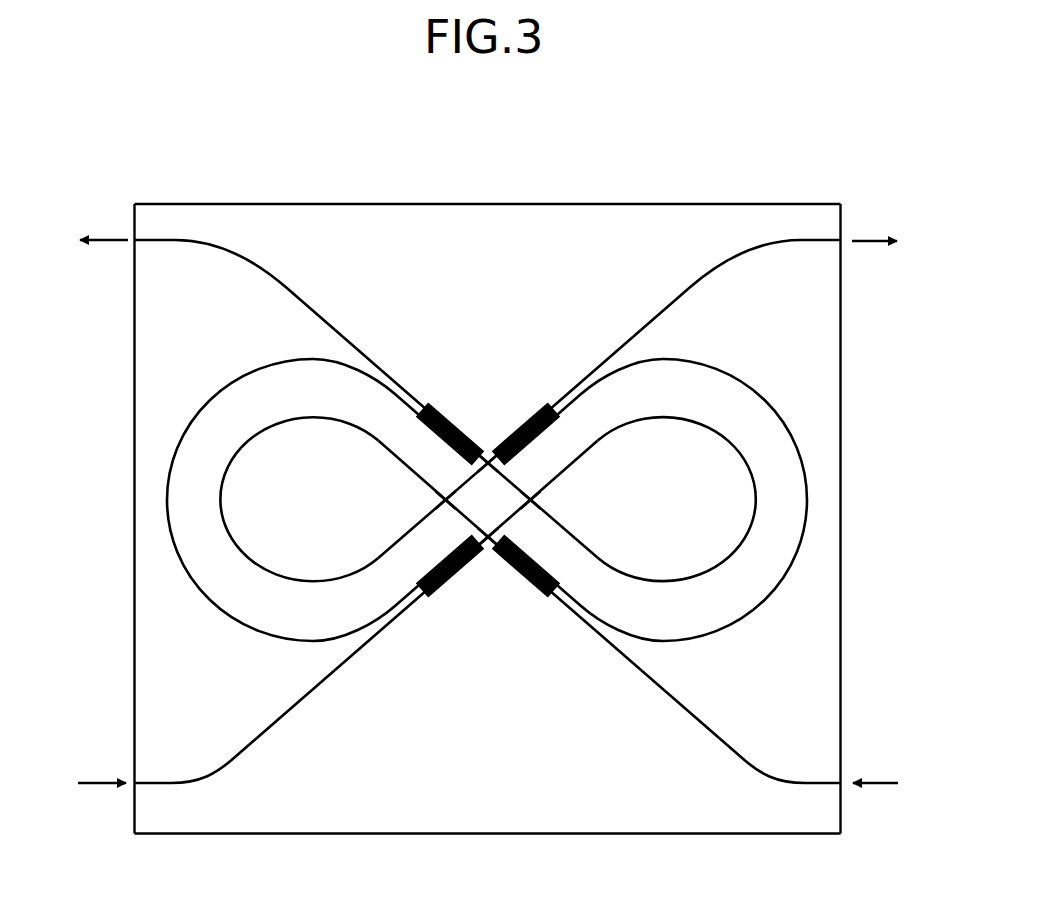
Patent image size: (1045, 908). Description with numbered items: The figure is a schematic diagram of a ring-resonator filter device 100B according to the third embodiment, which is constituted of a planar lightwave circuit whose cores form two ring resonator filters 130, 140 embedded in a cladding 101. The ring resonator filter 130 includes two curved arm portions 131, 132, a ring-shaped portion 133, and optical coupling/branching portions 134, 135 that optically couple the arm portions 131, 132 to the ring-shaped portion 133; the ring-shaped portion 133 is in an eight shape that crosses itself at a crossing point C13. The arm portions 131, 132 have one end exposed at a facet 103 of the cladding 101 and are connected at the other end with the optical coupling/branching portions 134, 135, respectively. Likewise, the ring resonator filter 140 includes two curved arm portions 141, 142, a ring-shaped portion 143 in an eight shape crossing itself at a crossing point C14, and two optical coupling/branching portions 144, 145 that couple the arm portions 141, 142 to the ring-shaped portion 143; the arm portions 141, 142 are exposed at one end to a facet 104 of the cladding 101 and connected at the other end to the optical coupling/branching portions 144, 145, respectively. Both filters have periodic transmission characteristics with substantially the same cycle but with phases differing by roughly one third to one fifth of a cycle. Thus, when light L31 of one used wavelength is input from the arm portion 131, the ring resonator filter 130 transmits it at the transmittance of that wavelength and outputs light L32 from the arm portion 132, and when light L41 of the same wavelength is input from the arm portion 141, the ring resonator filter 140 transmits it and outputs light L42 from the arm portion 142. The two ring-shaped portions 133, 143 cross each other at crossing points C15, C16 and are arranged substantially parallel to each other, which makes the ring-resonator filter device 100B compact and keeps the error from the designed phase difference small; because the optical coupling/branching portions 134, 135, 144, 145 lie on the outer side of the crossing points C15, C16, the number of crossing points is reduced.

The ring-resonator filter device 100B is at (903, 144).
The cladding 101 is at (787, 813).
The facet 103 is at (134, 666).
The facet 104 is at (841, 663).
The ring resonator filter 130 is at (170, 447).
The arm portion 131 is at (371, 640).
The arm portion 132 is at (358, 348).
The ring-shaped portion 133 is at (172, 561).
The optical coupling/branching portion 134 is at (449, 582).
The optical coupling/branching portion 135 is at (450, 410).
The ring resonator filter 140 is at (806, 418).
The arm portion 141 is at (604, 640).
The arm portion 142 is at (604, 358).
The ring-shaped portion 143 is at (783, 576).
The optical coupling/branching portion 144 is at (527, 582).
The optical coupling/branching portion 145 is at (526, 410).
The crossing point C13 is at (541, 498).
The crossing point C14 is at (433, 496).
The crossing point C15 is at (474, 530).
The crossing point C16 is at (503, 468).
The light L31 is at (84, 781).
The light L32 is at (102, 239).
The light L41 is at (886, 781).
The light L42 is at (868, 239).